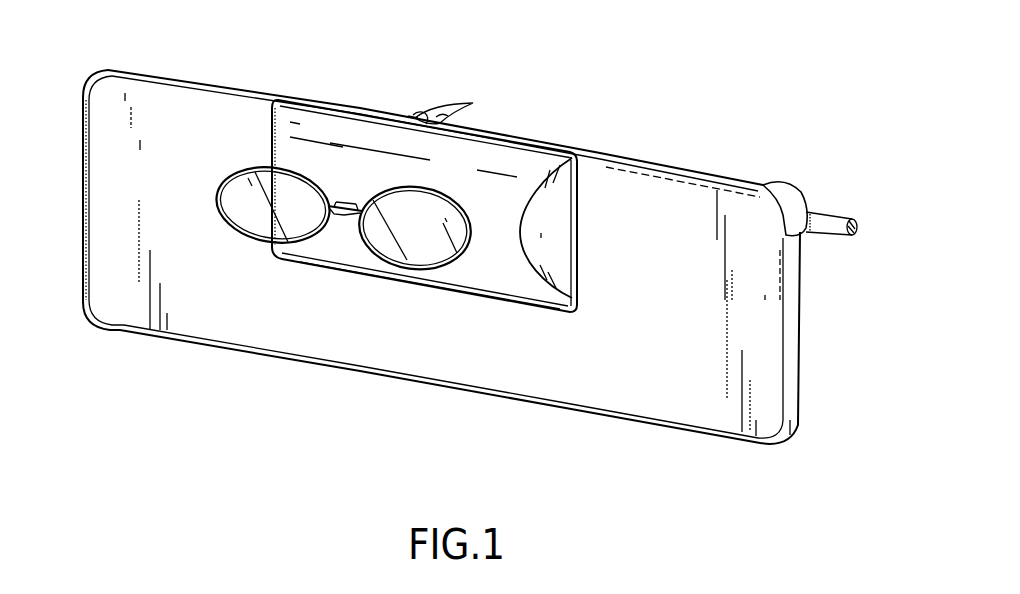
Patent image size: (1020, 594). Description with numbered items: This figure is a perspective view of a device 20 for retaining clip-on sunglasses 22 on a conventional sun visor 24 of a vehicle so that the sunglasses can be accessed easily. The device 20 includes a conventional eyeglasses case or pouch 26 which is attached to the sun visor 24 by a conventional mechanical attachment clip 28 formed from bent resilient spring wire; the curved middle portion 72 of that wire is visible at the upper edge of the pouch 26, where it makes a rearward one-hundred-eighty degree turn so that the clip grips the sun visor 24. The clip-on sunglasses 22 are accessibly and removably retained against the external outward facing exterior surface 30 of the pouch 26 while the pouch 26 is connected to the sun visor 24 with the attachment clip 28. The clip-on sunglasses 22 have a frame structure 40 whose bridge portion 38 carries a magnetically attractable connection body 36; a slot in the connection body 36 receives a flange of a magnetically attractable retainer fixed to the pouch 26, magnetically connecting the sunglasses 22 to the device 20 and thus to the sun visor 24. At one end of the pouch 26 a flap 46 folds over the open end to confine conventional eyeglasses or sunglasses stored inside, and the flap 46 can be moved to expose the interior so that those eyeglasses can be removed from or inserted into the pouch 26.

The device 20 is at (570, 144).
The clip-on sunglasses 22 is at (371, 185).
The sun visor 24 is at (775, 192).
The pouch 26 is at (456, 277).
The mechanical attachment clip 28 is at (443, 98).
The exterior surface 30 is at (493, 279).
The connection body 36 is at (345, 203).
The bridge portion 38 is at (333, 214).
The frame structure 40 is at (250, 241).
The flap 46 is at (557, 226).
The curved middle portion 72 is at (474, 104).